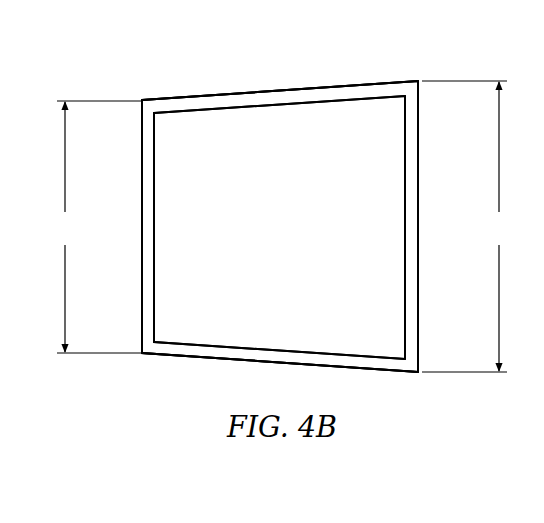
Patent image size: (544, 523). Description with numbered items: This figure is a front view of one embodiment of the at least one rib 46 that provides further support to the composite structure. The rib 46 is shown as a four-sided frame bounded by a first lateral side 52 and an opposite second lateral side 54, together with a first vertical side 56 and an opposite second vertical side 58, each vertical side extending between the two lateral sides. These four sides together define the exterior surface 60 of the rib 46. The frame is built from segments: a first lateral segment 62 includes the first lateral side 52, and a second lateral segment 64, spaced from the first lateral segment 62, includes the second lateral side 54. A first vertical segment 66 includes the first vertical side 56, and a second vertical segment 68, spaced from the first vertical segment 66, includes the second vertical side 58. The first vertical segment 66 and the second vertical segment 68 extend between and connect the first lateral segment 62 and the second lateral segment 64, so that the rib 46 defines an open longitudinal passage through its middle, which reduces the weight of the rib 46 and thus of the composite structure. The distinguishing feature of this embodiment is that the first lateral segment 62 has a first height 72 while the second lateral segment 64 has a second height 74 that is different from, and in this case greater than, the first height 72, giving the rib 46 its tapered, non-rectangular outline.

The rib 46 is at (146, 85).
The first lateral side 52 is at (139, 275).
The second lateral side 54 is at (424, 275).
The first vertical side 56 is at (357, 81).
The second vertical side 58 is at (192, 364).
The exterior surface 60 is at (225, 95).
The first lateral segment 62 is at (148, 165).
The second lateral segment 64 is at (413, 165).
The first vertical segment 66 is at (282, 99).
The second vertical segment 68 is at (373, 364).
The first height 72 is at (96, 227).
The second height 74 is at (467, 226).